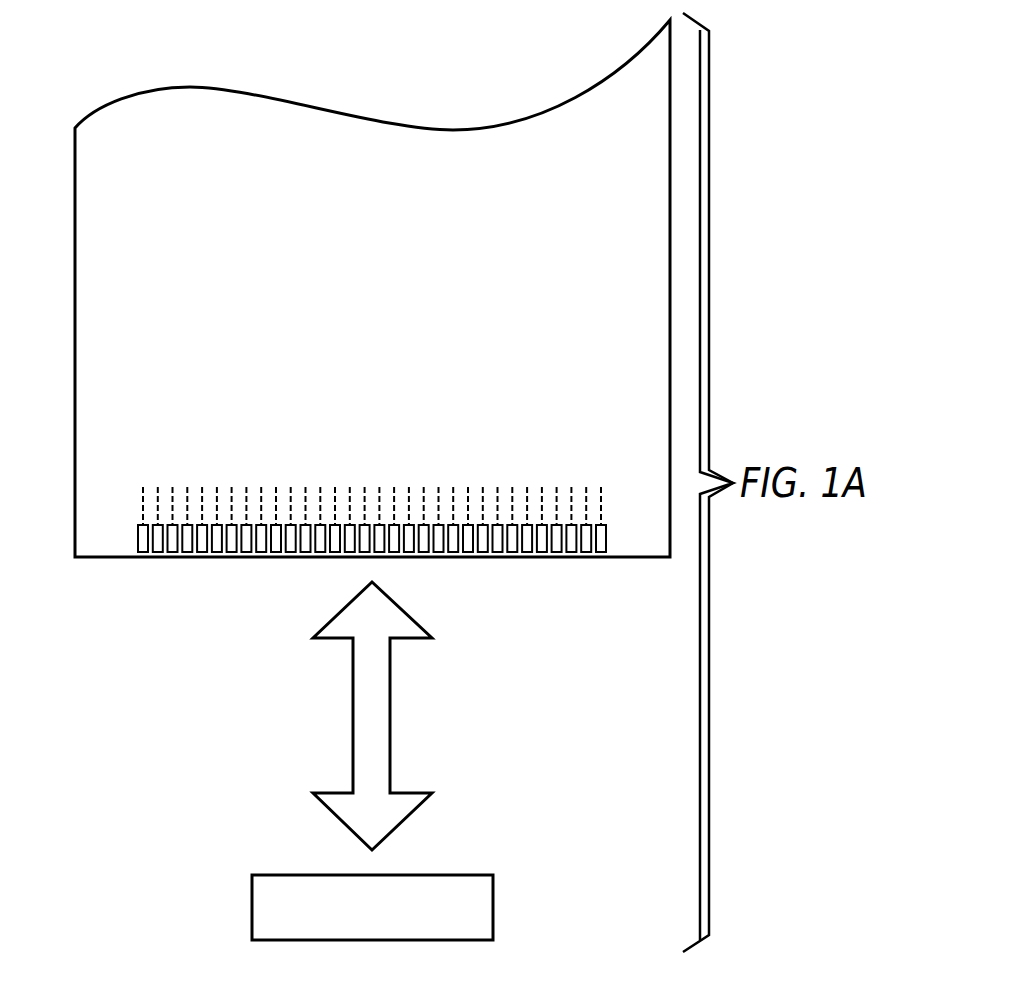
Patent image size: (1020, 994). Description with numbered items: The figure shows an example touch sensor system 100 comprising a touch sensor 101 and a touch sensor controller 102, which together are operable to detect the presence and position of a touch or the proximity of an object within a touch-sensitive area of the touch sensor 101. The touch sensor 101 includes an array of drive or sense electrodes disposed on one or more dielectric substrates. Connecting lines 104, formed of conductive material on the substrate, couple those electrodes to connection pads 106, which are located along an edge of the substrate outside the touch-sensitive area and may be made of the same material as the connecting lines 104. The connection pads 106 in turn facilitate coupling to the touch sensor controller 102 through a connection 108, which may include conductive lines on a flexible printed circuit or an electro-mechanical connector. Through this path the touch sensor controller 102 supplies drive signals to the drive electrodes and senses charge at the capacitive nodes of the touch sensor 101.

The touch sensor system 100 is at (105, 14).
The touch sensor 101 is at (97, 262).
The touch sensor controller 102 is at (252, 900).
The connecting lines 104 is at (142, 505).
The connection pads 106 is at (140, 537).
The connection 108 is at (353, 706).